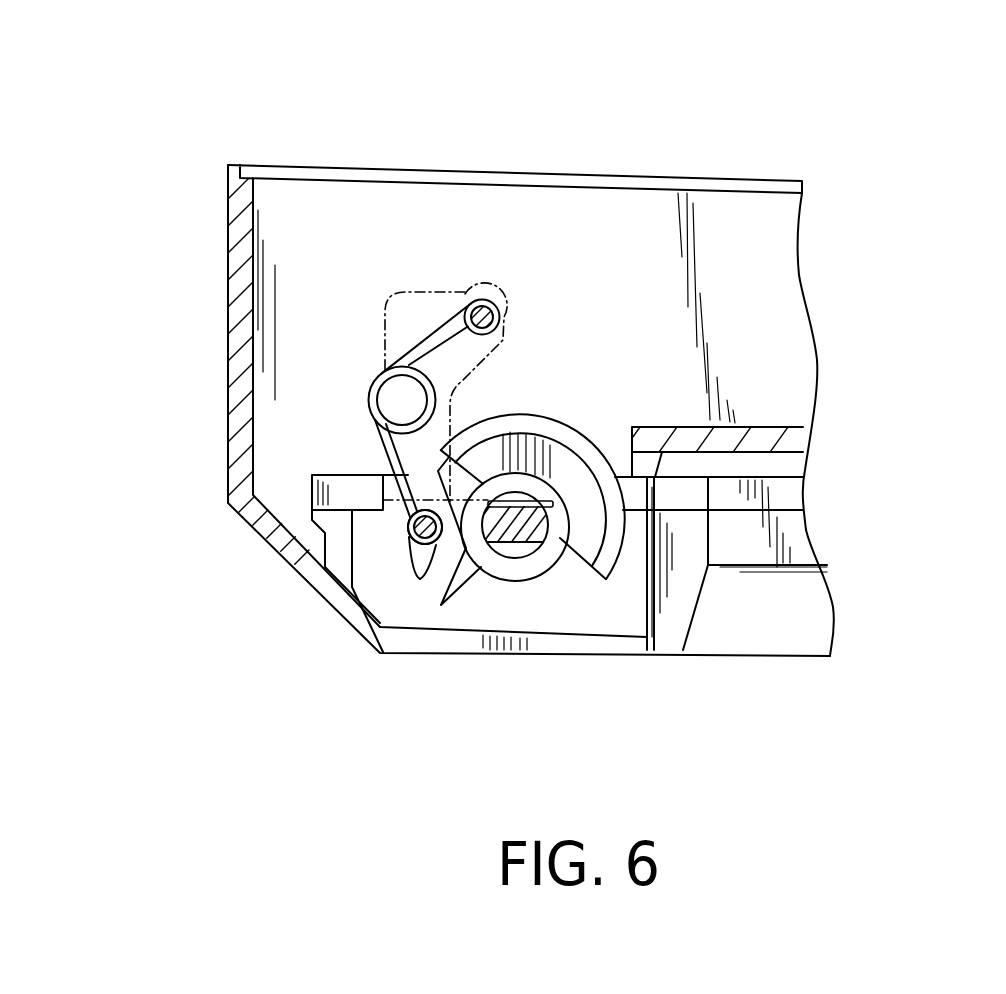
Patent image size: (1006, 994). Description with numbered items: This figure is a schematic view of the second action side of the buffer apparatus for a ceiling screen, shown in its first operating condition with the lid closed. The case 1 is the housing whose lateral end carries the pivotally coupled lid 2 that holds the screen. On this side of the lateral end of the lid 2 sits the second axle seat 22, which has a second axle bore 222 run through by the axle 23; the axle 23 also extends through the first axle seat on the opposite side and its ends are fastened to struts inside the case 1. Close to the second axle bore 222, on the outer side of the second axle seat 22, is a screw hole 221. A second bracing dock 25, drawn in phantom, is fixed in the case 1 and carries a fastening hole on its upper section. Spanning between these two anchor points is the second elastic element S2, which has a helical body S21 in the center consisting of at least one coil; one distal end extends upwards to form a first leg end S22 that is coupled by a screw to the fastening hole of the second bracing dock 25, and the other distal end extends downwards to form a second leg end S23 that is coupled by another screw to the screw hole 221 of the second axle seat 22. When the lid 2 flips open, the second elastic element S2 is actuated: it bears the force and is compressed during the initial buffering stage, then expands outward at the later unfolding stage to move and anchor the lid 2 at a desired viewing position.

The case 1 is at (715, 213).
The lid 2 is at (788, 617).
The second axle seat 22 is at (553, 427).
The screw hole 221 is at (428, 544).
The second axle bore 222 is at (566, 540).
The axle 23 is at (509, 540).
The second bracing dock 25 is at (393, 285).
The second elastic element S2 is at (357, 411).
The helical body S21 is at (375, 381).
The first leg end S22 is at (498, 294).
The second leg end S23 is at (412, 528).